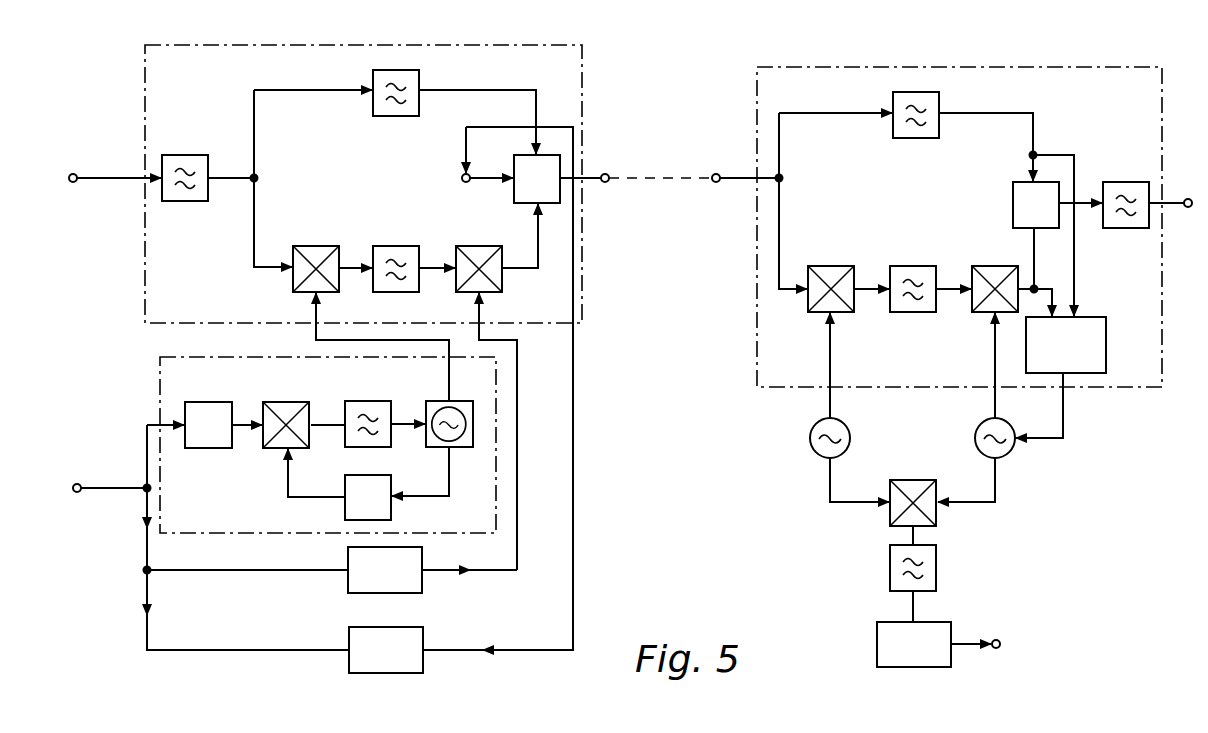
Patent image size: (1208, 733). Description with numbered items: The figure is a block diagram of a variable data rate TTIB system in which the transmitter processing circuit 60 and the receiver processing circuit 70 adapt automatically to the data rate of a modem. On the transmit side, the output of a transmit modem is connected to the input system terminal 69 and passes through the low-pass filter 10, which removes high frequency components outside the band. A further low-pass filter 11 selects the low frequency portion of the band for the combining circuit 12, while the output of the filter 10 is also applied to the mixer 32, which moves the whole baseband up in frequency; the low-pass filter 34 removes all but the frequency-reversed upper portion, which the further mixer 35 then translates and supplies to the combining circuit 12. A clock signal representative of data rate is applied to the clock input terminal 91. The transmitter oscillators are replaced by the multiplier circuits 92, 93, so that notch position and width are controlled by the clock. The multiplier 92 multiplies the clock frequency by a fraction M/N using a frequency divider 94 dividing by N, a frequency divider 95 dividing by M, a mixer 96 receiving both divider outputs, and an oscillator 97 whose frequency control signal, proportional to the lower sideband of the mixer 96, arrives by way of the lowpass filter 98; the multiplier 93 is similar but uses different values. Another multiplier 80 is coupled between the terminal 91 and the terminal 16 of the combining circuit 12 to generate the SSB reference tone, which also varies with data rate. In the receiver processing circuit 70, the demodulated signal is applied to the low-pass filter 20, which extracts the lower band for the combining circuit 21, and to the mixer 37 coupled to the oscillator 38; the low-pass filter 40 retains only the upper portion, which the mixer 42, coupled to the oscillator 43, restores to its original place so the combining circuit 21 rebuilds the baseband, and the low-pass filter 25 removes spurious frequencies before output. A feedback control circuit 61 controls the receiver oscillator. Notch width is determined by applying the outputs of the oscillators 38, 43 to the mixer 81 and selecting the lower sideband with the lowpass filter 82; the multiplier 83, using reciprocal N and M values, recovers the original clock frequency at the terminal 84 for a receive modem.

The TTIB transmitter processing circuit 60 is at (506, 14).
The input system terminal 69 is at (78, 176).
The low-pass filter 10 is at (196, 138).
The further low-pass filter 11 is at (402, 115).
The combining circuit 12 is at (530, 204).
The terminal of the combining circuit 16 is at (460, 180).
The mixer 32 is at (316, 246).
The low-pass filter 34 is at (402, 230).
The further mixer 35 is at (470, 246).
The multiplier circuit 92 is at (211, 534).
The clock input terminal 91 is at (80, 486).
The frequency divider 94 is at (208, 380).
The mixer 96 is at (290, 402).
The lowpass filter 98 is at (368, 401).
The oscillator 97 is at (458, 401).
The frequency divider 95 is at (345, 504).
The multiplier circuit 93 is at (346, 585).
The multiplier 80 is at (348, 640).
The TTIB receiver processing circuit 70 is at (1040, 36).
The low-pass filter 20 is at (938, 100).
The combining circuit 21 is at (1013, 182).
The low-pass filter 25 is at (1124, 229).
The mixer 37 is at (836, 266).
The low-pass filter 40 is at (916, 266).
The mixer 42 is at (994, 266).
The control circuit 61 is at (1106, 346).
The oscillator 38 is at (850, 434).
The oscillator 43 is at (978, 428).
The mixer 81 is at (912, 480).
The lowpass filter 82 is at (937, 570).
The multiplier 83 is at (877, 636).
The terminal 84 is at (998, 640).